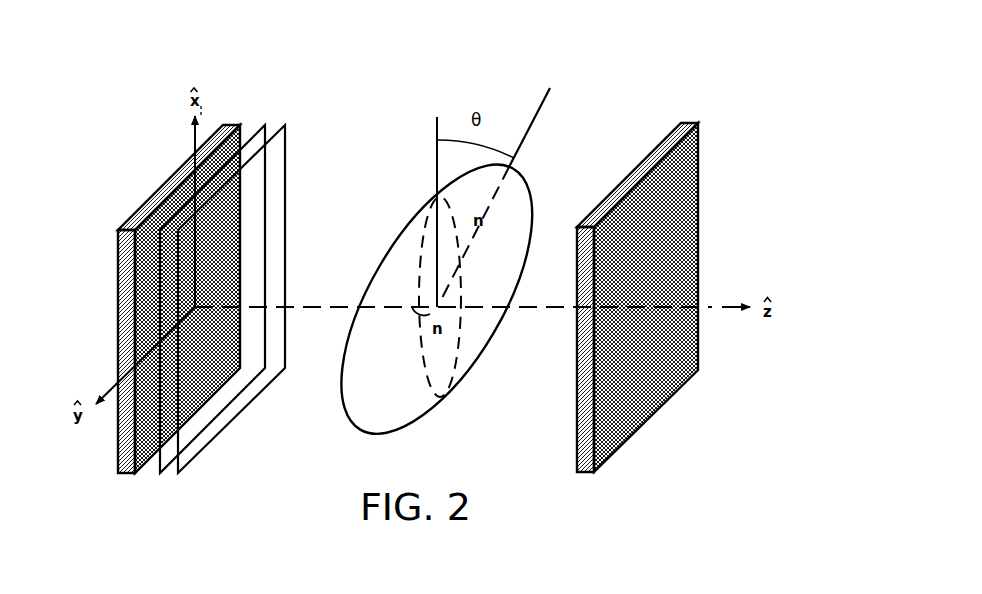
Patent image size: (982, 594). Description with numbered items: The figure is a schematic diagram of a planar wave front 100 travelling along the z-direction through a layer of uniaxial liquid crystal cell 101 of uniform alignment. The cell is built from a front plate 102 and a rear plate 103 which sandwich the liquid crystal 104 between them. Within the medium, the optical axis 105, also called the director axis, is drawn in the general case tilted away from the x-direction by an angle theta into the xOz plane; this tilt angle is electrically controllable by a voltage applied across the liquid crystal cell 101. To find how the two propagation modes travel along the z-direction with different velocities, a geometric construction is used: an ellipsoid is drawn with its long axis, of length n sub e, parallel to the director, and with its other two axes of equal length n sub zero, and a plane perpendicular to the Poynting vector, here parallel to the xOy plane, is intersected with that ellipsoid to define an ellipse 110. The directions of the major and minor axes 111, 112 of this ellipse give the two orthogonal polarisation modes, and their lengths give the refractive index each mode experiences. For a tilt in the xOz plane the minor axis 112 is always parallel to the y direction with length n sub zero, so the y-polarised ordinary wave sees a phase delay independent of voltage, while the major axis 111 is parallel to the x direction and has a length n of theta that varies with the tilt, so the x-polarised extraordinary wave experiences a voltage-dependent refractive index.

The planar wave front 100 is at (287, 177).
The uniaxial liquid crystal cell 101 is at (203, 281).
The front plate 102 is at (118, 253).
The rear plate 103 is at (657, 413).
The liquid crystal 104 is at (637, 259).
The optical axis 105 is at (538, 103).
The ellipse 110 is at (383, 436).
The major axis 111 is at (433, 201).
The minor axis 112 is at (437, 307).